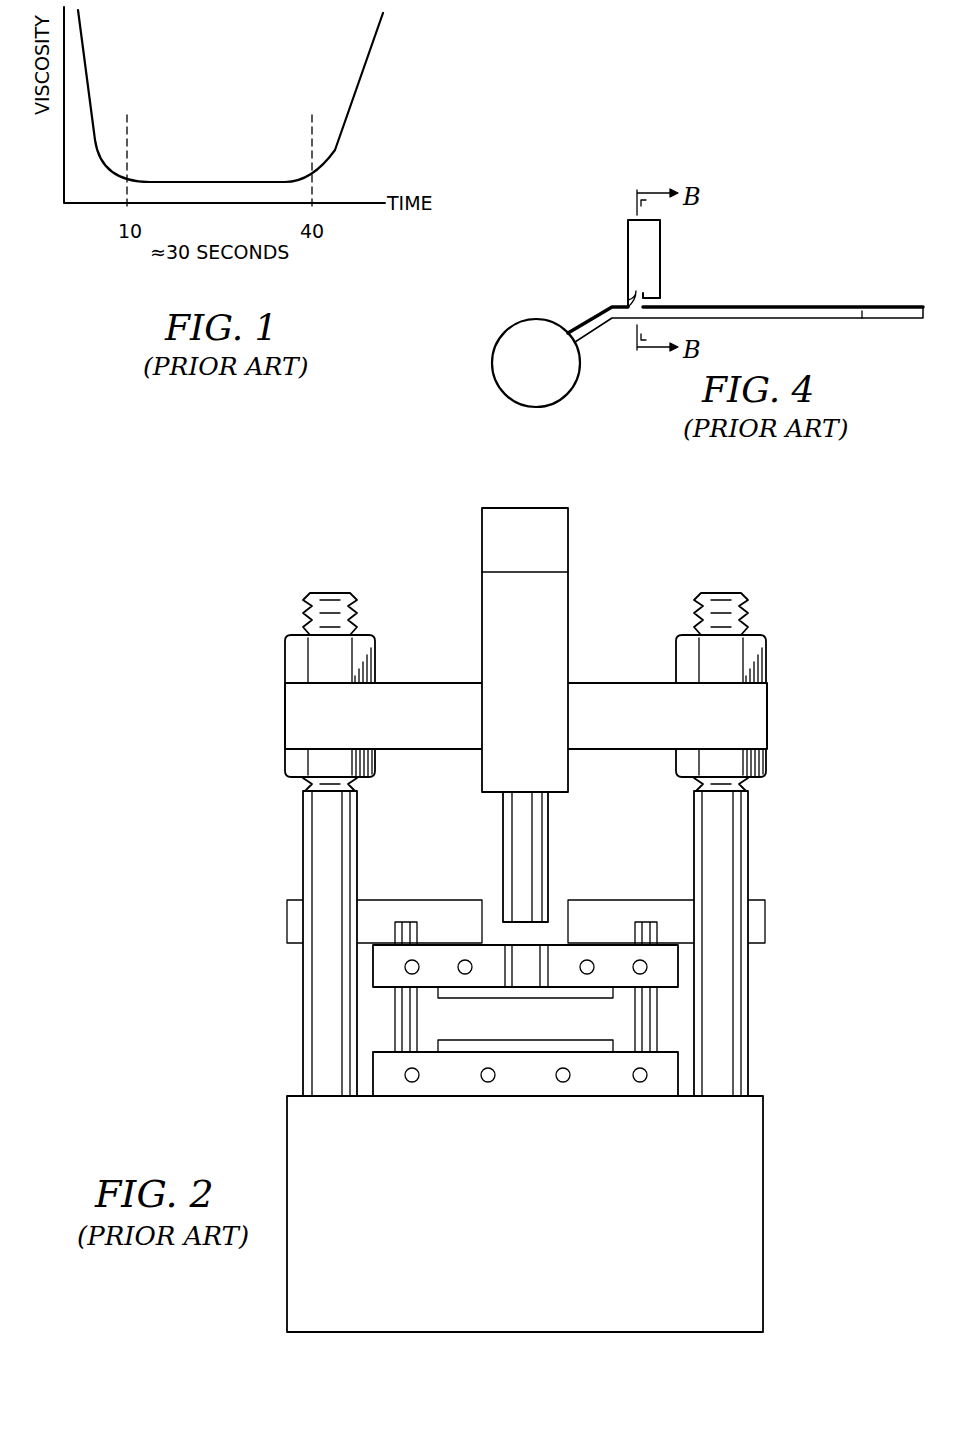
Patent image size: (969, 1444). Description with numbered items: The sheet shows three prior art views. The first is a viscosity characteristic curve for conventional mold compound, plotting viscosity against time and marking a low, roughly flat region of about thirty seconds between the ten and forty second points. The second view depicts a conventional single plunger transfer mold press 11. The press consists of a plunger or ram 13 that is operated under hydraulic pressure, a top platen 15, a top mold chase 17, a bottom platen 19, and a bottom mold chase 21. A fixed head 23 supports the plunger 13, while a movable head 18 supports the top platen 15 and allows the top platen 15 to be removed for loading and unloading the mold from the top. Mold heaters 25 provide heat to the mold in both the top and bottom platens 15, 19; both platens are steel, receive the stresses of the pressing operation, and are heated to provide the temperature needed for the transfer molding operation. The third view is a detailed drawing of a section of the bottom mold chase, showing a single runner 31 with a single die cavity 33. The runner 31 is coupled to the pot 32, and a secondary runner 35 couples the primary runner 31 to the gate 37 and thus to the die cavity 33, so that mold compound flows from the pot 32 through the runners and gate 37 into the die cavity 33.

In FIG. 2, the single plunger transfer mold press 11 is at (182, 776).
In FIG. 2, the plunger 13 is at (548, 834).
In FIG. 2, the top platen 15 is at (665, 990).
In FIG. 2, the top mold chase 17 is at (455, 999).
In FIG. 2, the movable head 18 is at (286, 920).
In FIG. 2, the bottom platen 19 is at (388, 1051).
In FIG. 2, the bottom mold chase 21 is at (597, 1040).
In FIG. 2, the fixed head 23 is at (770, 716).
In FIG. 2, the mold heaters 25 is at (642, 1082).
In FIG. 4, the runner 31 is at (812, 306).
In FIG. 4, the pot 32 is at (550, 374).
In FIG. 4, the die cavity 33 is at (661, 246).
In FIG. 4, the secondary runner 35 is at (661, 300).
In FIG. 4, the gate 37 is at (632, 296).